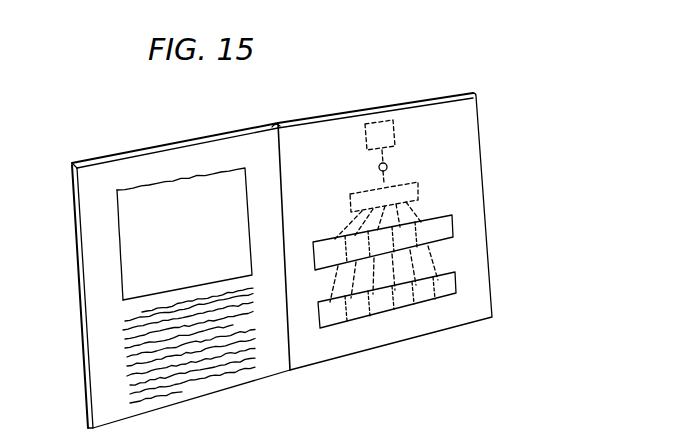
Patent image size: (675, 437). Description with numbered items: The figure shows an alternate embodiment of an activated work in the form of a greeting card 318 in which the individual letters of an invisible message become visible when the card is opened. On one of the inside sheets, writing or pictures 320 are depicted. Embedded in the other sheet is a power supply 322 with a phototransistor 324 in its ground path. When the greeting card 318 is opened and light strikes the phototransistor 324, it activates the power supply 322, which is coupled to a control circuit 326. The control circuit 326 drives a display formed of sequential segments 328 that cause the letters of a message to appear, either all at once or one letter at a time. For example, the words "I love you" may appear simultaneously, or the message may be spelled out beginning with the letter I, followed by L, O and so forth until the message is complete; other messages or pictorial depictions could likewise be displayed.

The greeting card 318 is at (227, 137).
The writing or pictures 320 is at (121, 348).
The power supply 322 is at (397, 128).
The phototransistor 324 is at (379, 166).
The control circuit 326 is at (420, 184).
The sequential segments 328 is at (362, 232).